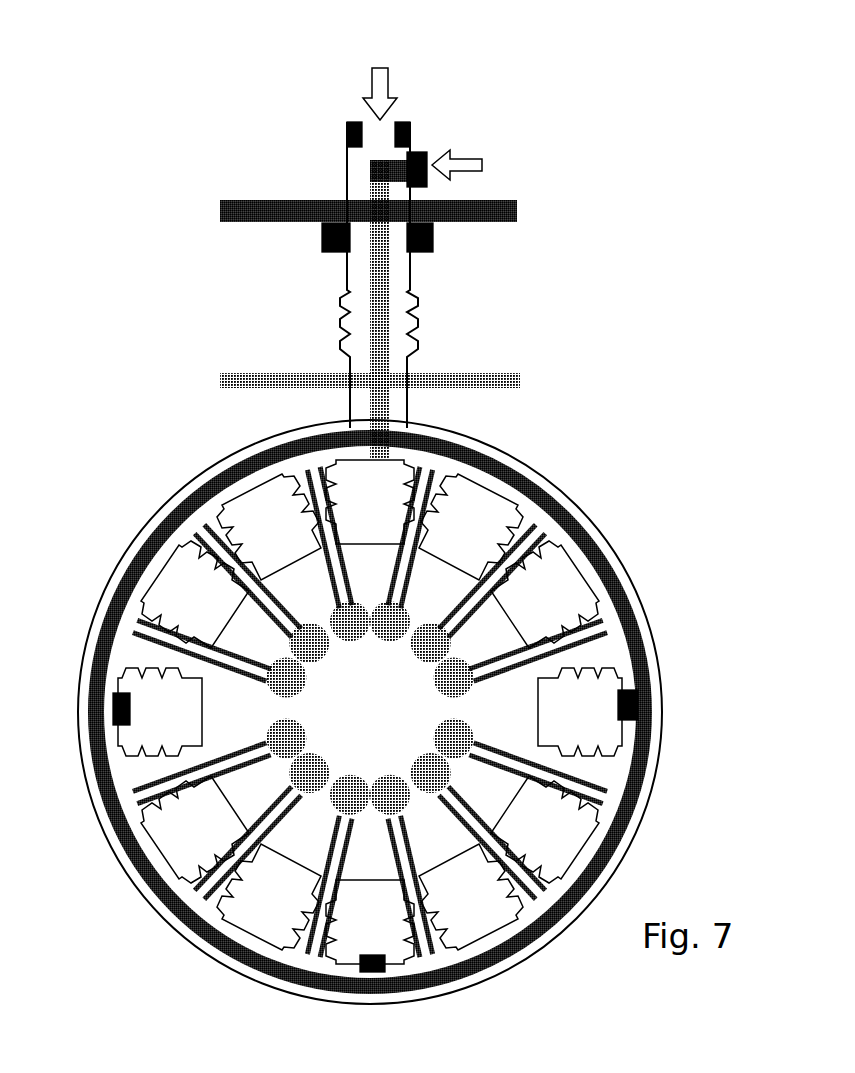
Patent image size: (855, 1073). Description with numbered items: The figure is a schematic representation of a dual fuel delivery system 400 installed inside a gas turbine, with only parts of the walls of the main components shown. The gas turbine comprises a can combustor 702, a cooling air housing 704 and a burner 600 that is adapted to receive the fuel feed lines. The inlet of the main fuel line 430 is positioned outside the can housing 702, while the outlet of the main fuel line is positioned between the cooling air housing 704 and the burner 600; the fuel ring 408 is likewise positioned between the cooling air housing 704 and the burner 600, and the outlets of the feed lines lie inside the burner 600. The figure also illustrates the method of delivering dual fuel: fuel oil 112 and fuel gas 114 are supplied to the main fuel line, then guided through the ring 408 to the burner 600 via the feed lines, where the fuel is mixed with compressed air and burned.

The dual fuel delivery system 400 is at (156, 366).
The fuel gas 114 is at (380, 74).
The inlet of the main fuel line 430 is at (384, 139).
The fuel oil 112 is at (478, 171).
The can combustor 702 is at (520, 215).
The cooling air housing 704 is at (520, 381).
The fuel ring 408 is at (612, 506).
The burner 600 is at (537, 713).